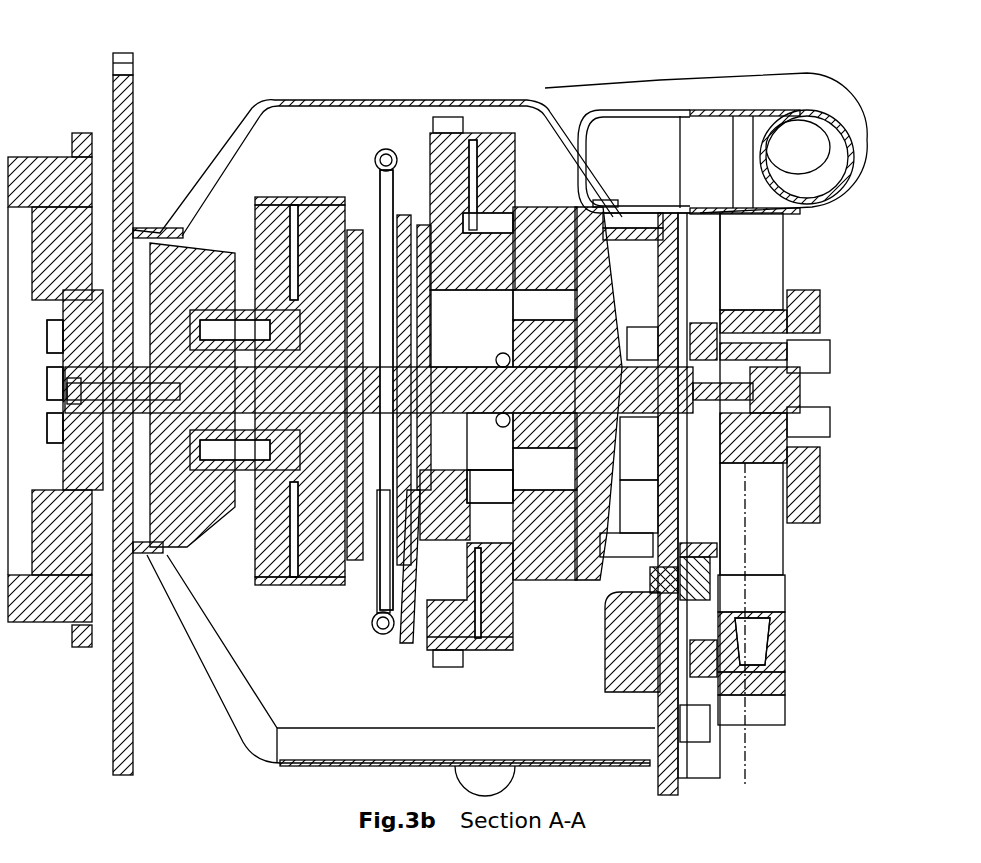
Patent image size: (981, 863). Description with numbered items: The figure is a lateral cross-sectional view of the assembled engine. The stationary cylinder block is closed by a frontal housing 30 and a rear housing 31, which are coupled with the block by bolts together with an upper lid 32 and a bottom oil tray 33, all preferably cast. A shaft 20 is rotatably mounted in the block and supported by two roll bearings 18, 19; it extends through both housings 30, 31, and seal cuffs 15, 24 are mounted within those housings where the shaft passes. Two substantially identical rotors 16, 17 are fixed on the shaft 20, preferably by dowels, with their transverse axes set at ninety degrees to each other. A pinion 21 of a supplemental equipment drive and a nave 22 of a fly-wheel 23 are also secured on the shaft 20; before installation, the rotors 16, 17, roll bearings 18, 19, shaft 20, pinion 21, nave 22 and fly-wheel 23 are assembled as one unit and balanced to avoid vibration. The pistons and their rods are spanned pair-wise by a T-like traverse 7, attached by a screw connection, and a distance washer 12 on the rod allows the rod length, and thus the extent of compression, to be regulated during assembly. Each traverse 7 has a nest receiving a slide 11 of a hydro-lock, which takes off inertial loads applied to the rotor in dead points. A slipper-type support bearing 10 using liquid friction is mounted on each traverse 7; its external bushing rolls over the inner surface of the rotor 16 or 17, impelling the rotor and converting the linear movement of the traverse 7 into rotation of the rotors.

The T-like traverse 7 is at (492, 285).
The support bearing 10 is at (537, 207).
The slide 11 is at (460, 655).
The distance washer 12 is at (380, 560).
The seal cuff 15 is at (83, 647).
The rotor 16 is at (585, 240).
The rotor 17 is at (175, 215).
The roll bearing 18 is at (277, 200).
The roll bearing 19 is at (517, 343).
The shaft 20 is at (147, 595).
The pinion 21 is at (745, 785).
The nave 22 is at (97, 200).
The fly-wheel 23 is at (43, 157).
The seal cuff 24 is at (753, 307).
The frontal housing 30 is at (662, 240).
The rear housing 31 is at (137, 226).
The upper lid 32 is at (330, 100).
The bottom oil tray 33 is at (220, 702).